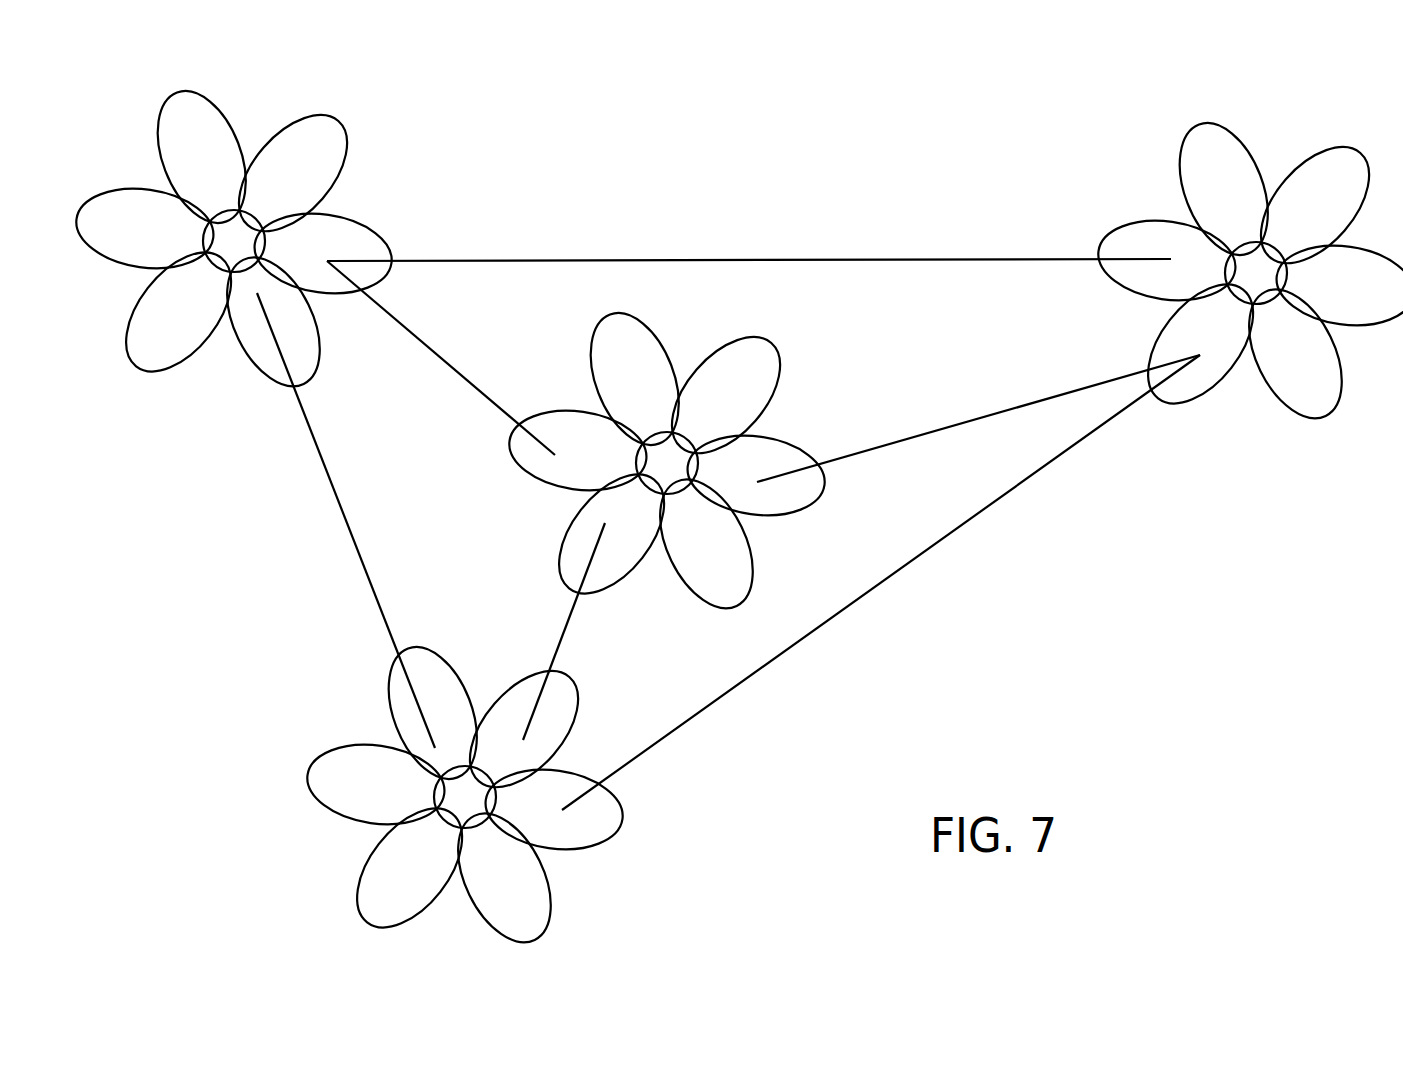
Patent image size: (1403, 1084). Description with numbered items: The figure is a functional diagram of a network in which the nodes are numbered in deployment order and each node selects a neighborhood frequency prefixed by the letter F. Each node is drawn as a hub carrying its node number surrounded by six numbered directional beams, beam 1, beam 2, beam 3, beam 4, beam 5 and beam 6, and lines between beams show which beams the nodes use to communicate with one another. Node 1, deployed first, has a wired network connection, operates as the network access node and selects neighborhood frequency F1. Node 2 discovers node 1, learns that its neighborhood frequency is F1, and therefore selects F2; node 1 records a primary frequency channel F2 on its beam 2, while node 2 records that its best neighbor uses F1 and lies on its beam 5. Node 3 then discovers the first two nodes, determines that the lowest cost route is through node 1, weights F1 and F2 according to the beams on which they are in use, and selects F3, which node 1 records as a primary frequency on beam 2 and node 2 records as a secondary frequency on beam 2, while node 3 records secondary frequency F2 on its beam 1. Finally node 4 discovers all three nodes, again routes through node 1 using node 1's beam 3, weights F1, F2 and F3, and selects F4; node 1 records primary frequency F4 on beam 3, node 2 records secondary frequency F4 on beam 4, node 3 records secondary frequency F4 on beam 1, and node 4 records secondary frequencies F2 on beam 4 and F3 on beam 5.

The neighborhood frequency F1 is at (234, 166).
The neighborhood frequency F2 is at (682, 409).
The neighborhood frequency F3 is at (1185, 234).
The neighborhood frequency F4 is at (561, 797).
The node 1 / beam # 1 is at (745, 517).
The node 2 / beam # 2 is at (744, 516).
The node 3 / beam # 3 is at (746, 451).
The node 4 / beam # 4 is at (752, 466).
The beam # 5 is at (737, 529).
The beam # 6 is at (751, 518).